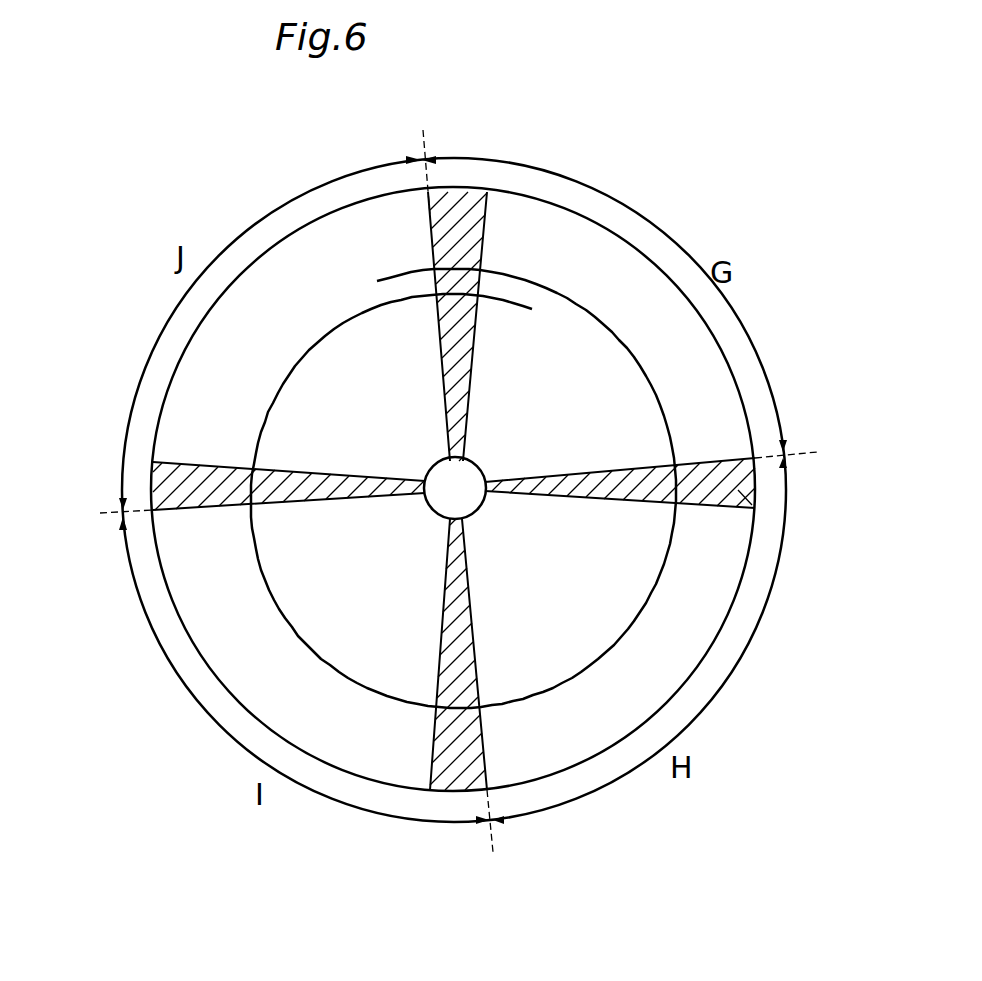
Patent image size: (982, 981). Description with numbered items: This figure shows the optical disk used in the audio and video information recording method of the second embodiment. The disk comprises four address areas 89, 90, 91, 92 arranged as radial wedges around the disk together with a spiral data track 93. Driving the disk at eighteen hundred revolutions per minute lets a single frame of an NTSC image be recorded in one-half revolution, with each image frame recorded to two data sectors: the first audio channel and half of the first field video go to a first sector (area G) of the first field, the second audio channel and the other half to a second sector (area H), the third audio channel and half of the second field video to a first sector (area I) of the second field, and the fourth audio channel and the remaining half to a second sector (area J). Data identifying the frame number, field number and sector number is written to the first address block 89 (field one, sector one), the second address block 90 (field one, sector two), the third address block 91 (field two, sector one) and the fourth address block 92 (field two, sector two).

The first address block 89 is at (466, 212).
The second address block 90 is at (755, 510).
The third address block 91 is at (447, 767).
The fourth address block 92 is at (176, 483).
The spiral inner ring 93 is at (605, 322).